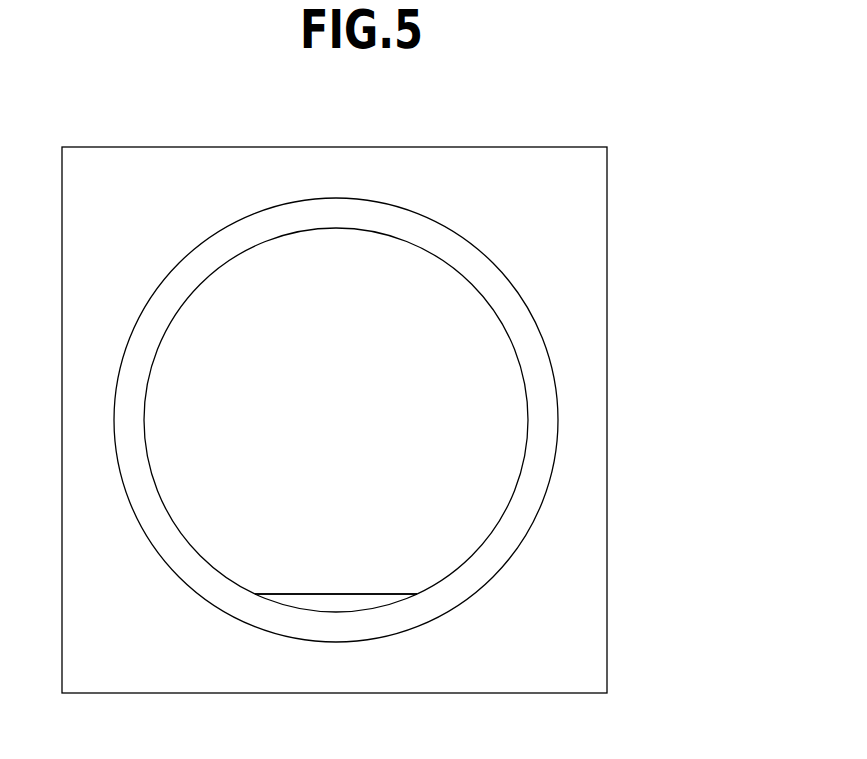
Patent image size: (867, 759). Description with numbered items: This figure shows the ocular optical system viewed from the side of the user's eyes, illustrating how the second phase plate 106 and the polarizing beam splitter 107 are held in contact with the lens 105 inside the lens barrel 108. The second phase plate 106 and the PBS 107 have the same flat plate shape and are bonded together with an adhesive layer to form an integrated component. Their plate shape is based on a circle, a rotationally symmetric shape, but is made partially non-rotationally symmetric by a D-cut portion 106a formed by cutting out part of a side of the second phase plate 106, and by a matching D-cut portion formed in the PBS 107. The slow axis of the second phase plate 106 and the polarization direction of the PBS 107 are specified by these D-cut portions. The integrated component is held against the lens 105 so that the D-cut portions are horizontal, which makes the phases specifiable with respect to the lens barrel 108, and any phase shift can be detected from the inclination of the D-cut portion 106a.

The lens 105 is at (312, 600).
The second phase plate 106 is at (434, 420).
The polarizing beam splitter (PBS) 107 is at (467, 422).
The D-cut portion 106a is at (351, 673).
The lens barrel 108 is at (332, 245).